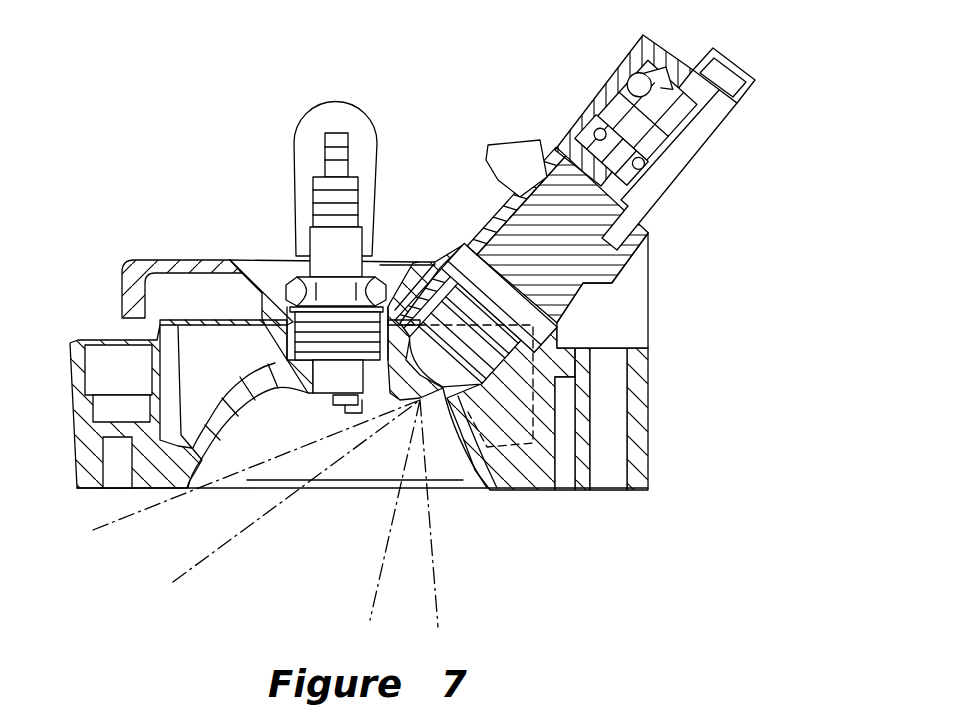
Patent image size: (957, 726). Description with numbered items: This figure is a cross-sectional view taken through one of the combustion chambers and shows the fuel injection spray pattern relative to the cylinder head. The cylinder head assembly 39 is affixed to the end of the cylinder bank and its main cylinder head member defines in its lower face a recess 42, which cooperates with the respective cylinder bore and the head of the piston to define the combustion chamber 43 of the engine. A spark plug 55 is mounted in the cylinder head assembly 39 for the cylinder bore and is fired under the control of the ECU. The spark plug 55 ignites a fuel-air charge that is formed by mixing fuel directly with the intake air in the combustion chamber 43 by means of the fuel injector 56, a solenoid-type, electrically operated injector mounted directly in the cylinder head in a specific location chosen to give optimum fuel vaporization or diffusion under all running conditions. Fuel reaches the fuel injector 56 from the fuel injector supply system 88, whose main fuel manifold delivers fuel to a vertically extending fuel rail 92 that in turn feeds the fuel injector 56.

The cylinder head assembly 39 is at (633, 390).
The recess 42 is at (231, 426).
The combustion chamber 43 is at (400, 470).
The spark plug 55 is at (308, 197).
The fuel injector 56 is at (472, 246).
The fuel injector supply system 88 is at (496, 211).
The fuel rail 92 is at (612, 78).